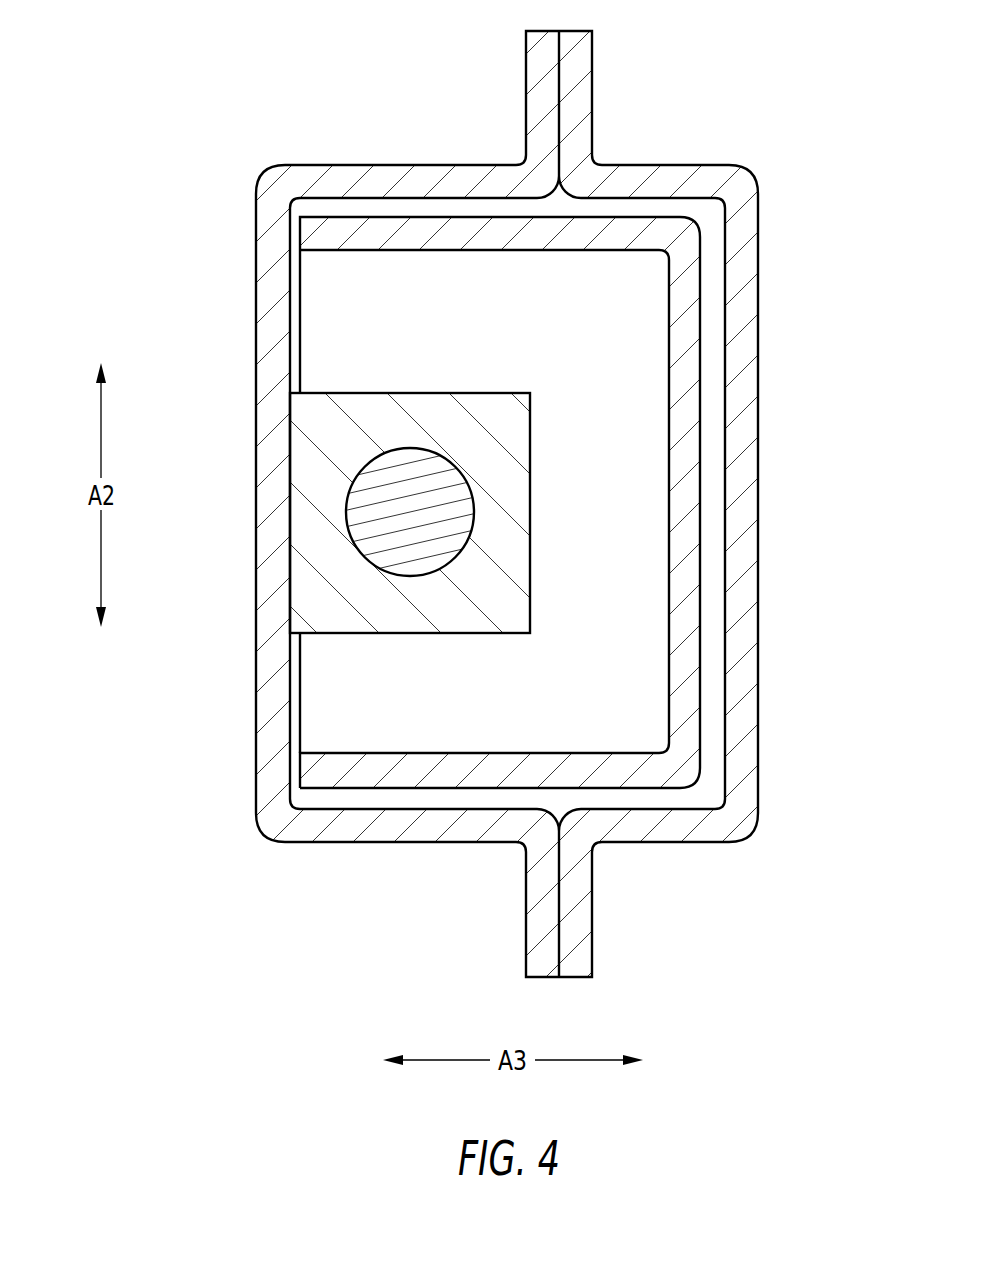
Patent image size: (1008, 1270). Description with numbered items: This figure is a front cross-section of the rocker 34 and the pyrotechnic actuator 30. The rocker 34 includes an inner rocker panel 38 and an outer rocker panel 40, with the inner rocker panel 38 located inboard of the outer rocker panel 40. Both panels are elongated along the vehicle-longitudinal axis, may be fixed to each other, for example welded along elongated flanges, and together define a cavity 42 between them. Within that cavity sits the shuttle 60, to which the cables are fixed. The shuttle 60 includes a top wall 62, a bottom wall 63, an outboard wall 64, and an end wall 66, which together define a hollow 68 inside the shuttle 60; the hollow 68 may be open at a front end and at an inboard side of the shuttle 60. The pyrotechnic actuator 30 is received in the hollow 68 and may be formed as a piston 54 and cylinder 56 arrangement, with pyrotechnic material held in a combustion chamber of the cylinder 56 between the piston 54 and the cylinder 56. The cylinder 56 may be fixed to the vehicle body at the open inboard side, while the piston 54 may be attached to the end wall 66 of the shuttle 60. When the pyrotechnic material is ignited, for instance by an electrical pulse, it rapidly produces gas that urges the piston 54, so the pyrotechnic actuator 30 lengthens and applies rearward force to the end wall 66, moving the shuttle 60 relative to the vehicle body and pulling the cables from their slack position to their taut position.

The pyrotechnic actuator 30 is at (402, 391).
The rocker 34 is at (205, 210).
The inner rocker panel 38 is at (256, 700).
The outer rocker panel 40 is at (758, 455).
The cavity 42 is at (712, 381).
The piston 54 is at (403, 511).
The cylinder 56 is at (358, 603).
The shuttle 60 is at (442, 788).
The top wall 62 is at (632, 230).
The bottom wall 63 is at (632, 772).
The outboard wall 64 is at (682, 570).
The end wall 66 is at (613, 318).
The hollow 68 is at (612, 644).